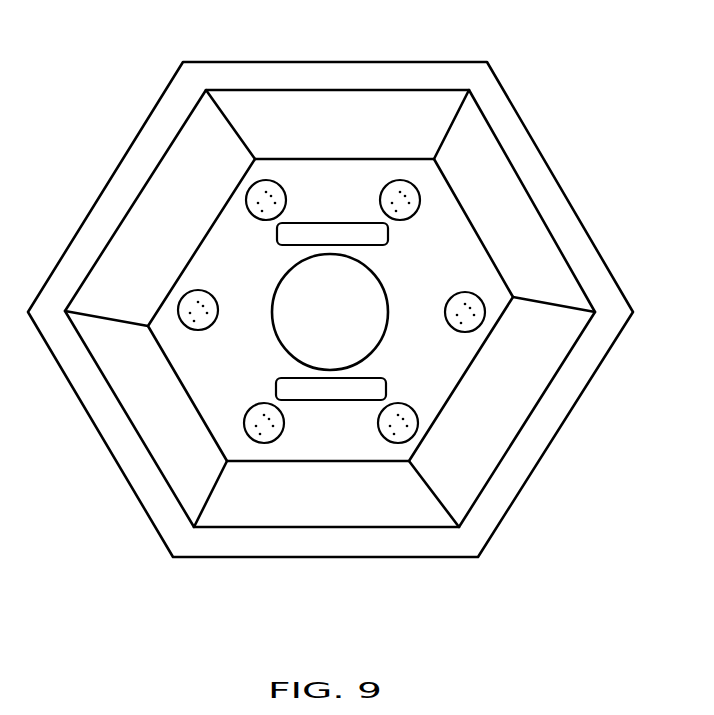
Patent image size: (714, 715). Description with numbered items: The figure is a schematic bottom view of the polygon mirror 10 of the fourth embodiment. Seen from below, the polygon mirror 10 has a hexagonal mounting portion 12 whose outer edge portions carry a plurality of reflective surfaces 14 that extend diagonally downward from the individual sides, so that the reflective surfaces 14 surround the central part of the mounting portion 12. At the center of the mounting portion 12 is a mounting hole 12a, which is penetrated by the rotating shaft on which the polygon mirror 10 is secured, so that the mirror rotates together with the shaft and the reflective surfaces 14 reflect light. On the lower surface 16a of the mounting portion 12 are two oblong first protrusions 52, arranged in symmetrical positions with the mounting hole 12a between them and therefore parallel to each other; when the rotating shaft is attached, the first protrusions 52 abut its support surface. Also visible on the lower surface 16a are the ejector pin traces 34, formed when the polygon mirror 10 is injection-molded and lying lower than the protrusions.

The polygon mirror 10 is at (534, 94).
The mounting portion 12 is at (445, 236).
The mounting hole 12a is at (278, 322).
The reflective surfaces 14 is at (612, 353).
The lower surface 16a is at (447, 374).
The ejector pin traces 34 is at (478, 305).
The first protrusions 52 is at (311, 237).